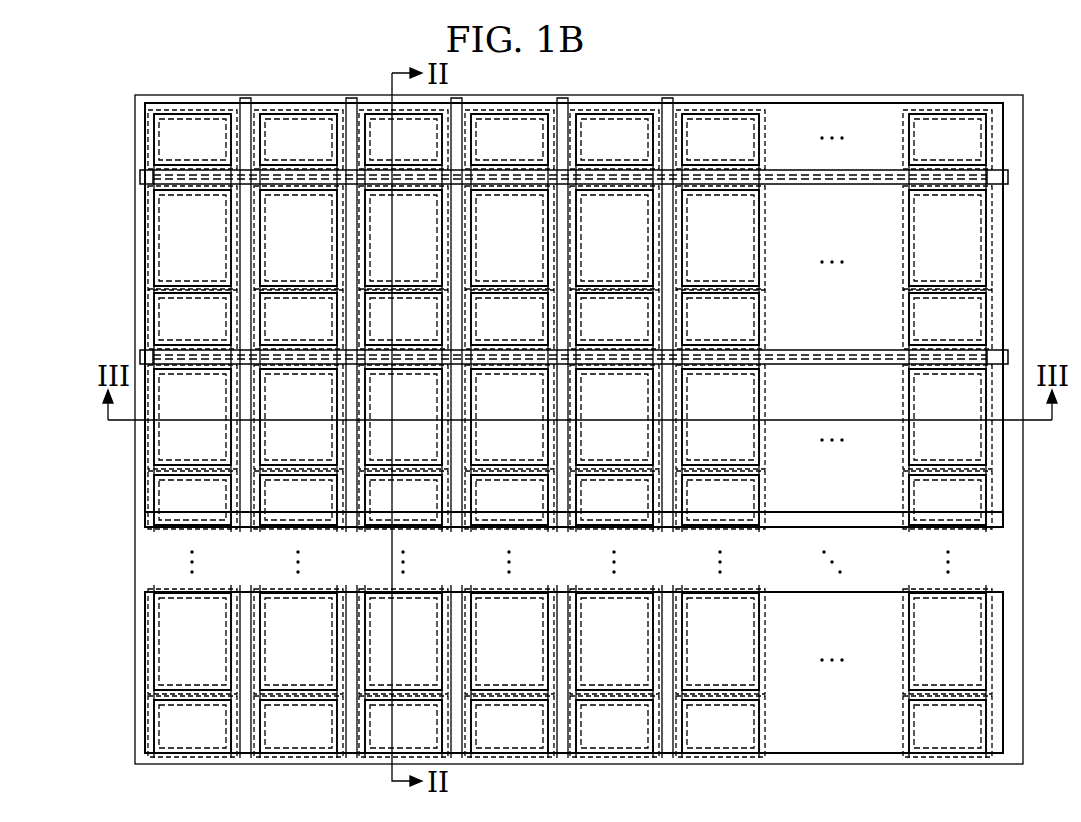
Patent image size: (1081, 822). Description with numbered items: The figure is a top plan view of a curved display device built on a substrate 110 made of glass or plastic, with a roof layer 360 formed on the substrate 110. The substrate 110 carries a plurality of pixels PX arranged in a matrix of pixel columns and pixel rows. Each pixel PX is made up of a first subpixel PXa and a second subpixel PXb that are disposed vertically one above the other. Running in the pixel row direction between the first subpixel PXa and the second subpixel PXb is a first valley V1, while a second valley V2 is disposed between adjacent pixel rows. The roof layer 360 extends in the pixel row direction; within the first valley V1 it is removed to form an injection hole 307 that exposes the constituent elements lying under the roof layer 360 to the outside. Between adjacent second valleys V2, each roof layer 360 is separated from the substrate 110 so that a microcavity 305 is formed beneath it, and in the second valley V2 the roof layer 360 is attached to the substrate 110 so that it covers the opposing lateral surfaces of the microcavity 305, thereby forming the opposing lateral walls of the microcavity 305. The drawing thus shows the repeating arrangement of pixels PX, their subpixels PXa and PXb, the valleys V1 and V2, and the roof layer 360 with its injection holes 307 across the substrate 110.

The substrate 110 is at (322, 95).
The microcavity 305 is at (148, 154).
The injection hole 307 is at (177, 176).
The roof layer 360 is at (145, 108).
The first valley V1 is at (140, 177).
The second valley V2 is at (246, 99).
The pixel PX is at (506, 405).
The first subpixel PXa is at (160, 130).
The second subpixel PXb is at (160, 235).